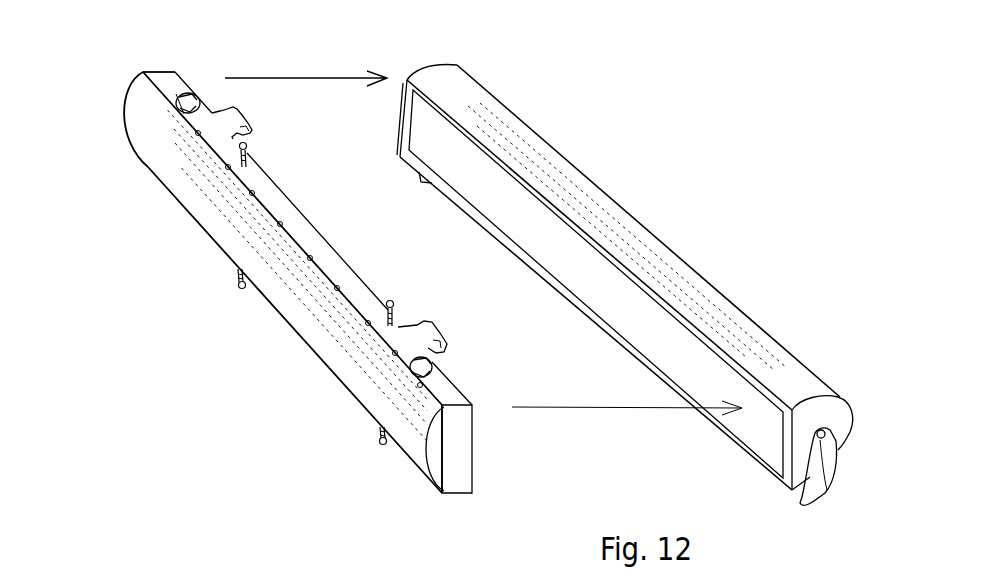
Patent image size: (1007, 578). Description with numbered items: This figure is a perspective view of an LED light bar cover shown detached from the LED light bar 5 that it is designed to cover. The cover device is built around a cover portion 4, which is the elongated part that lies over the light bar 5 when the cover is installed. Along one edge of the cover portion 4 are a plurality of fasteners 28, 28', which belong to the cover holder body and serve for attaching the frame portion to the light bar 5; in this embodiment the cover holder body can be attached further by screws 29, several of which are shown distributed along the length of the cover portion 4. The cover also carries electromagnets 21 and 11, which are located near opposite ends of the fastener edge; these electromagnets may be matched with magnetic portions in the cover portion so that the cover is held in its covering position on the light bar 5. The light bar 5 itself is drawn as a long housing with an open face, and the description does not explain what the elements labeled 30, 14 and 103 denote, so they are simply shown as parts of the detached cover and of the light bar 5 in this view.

The cover portion 4 is at (215, 198).
The electromagnet 21 is at (187, 100).
The bracket 30 is at (185, 108).
The fastener 28 is at (257, 117).
The fastener 28' is at (432, 320).
The screw 29 is at (250, 144).
The electromagnet 11 is at (431, 368).
The housing box 14 is at (490, 193).
The light bar 5 is at (840, 410).
The hook 103 is at (827, 468).